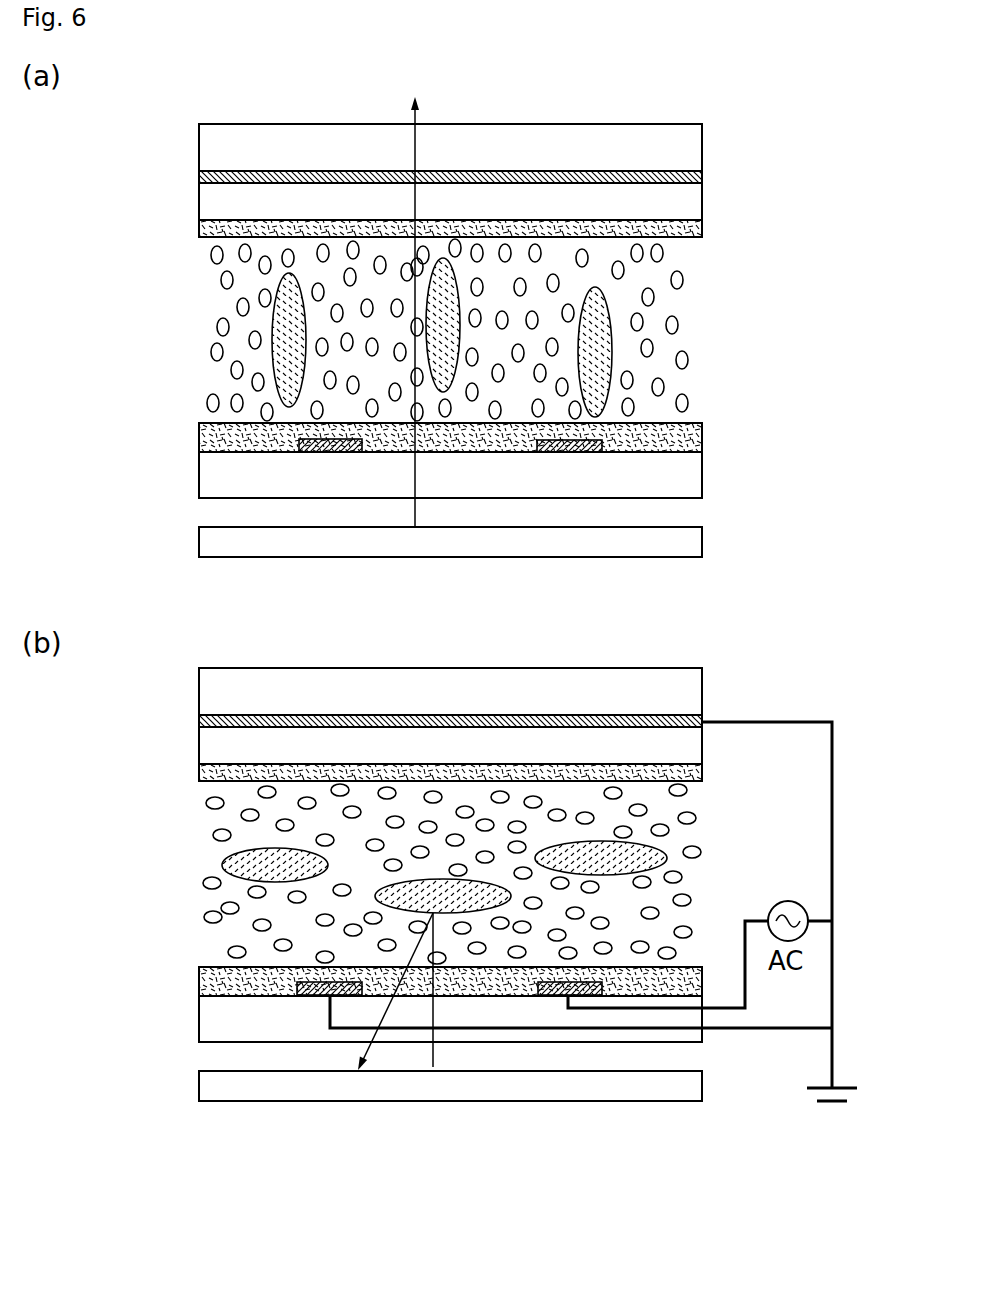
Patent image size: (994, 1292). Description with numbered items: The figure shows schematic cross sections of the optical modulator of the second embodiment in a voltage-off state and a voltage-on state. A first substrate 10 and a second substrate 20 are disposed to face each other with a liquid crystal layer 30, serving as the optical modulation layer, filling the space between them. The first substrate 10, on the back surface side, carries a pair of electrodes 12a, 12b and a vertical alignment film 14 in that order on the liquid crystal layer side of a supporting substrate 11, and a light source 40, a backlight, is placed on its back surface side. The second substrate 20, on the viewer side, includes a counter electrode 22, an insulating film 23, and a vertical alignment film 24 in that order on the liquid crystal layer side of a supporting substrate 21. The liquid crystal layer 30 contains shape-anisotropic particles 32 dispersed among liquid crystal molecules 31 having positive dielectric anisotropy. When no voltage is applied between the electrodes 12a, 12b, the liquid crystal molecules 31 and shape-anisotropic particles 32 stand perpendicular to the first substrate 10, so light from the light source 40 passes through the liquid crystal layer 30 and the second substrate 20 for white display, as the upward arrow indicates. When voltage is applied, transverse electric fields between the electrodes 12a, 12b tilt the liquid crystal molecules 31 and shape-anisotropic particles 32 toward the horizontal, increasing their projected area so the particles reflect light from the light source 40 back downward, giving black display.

The first substrate 10 is at (120, 423).
The supporting substrate 11 is at (205, 479).
The electrode 12a is at (328, 452).
The electrode 12b is at (565, 452).
The vertical alignment film 14 is at (200, 436).
The second substrate 20 is at (120, 124).
The supporting substrate 21 is at (205, 148).
The counter electrode 22 is at (203, 176).
The insulating film 23 is at (205, 203).
The vertical alignment film 24 is at (200, 228).
The liquid crystal layer 30 is at (708, 240).
The liquid crystal molecules 31 is at (237, 305).
The shape-anisotropic particles 32 is at (292, 341).
The light source 40 is at (205, 543).